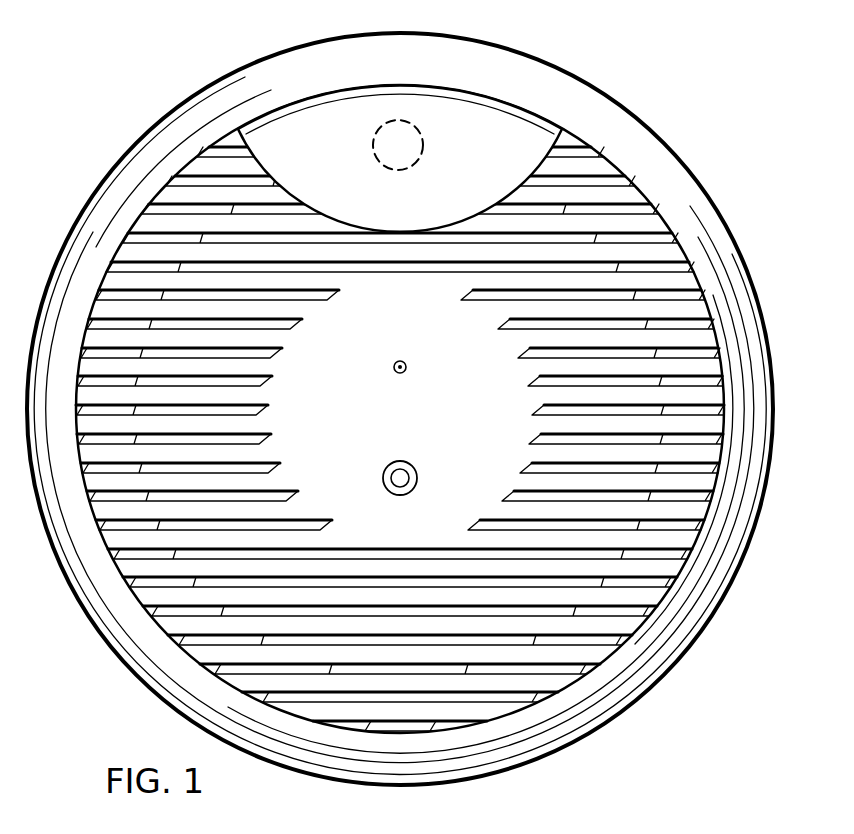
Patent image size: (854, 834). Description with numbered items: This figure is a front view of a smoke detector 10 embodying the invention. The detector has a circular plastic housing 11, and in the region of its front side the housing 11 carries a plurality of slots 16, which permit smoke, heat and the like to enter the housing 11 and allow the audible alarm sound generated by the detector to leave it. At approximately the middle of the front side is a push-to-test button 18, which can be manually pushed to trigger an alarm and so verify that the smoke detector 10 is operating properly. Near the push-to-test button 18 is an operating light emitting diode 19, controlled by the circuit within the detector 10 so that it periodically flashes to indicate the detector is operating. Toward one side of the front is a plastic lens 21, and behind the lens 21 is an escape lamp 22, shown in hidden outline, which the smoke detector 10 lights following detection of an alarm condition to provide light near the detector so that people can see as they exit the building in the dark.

The smoke detector 10 is at (668, 104).
The circular plastic housing 11 is at (106, 172).
The slots 16 is at (614, 644).
The push-to-test button 18 is at (418, 472).
The operating light emitting diode (LED) 19 is at (407, 364).
The plastic lens 21 is at (472, 122).
The escape lamp 22 is at (402, 118).